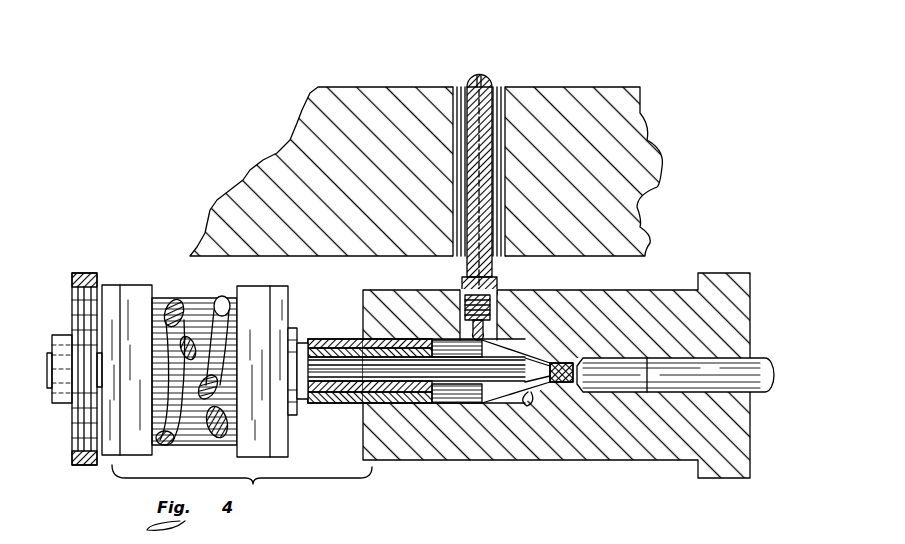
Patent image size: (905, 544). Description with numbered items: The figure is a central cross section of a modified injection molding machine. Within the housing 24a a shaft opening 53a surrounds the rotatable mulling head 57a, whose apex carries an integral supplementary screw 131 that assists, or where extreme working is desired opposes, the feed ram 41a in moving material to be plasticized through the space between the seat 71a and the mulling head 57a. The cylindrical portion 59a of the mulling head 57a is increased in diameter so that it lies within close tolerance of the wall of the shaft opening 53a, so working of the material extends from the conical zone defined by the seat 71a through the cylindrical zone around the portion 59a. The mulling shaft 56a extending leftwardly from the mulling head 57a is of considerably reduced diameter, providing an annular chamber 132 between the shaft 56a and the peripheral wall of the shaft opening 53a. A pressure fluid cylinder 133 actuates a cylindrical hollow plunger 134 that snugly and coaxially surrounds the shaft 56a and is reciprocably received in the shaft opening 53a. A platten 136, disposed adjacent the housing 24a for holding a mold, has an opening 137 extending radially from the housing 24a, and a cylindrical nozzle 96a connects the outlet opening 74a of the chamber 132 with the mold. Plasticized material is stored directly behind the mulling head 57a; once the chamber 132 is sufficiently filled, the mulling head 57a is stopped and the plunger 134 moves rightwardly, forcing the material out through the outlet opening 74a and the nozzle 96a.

The platten 136 is at (455, 88).
The opening 137 is at (479, 171).
The cylindrical nozzle 96a is at (494, 90).
The housing 24a is at (667, 452).
The outlet opening 74a is at (474, 338).
The rotatable mulling head 57a is at (542, 336).
The cylindrical portion 59a is at (507, 405).
The seat 71a is at (529, 400).
The mulling shaft 56a is at (348, 339).
The cylindrical hollow plunger 134 is at (346, 398).
The shaft opening 53a is at (465, 405).
The annular chamber 132 is at (433, 405).
The supplementary screw 131 is at (575, 378).
The feed ram 41a is at (757, 368).
The pressure fluid cylinder 133 is at (272, 272).